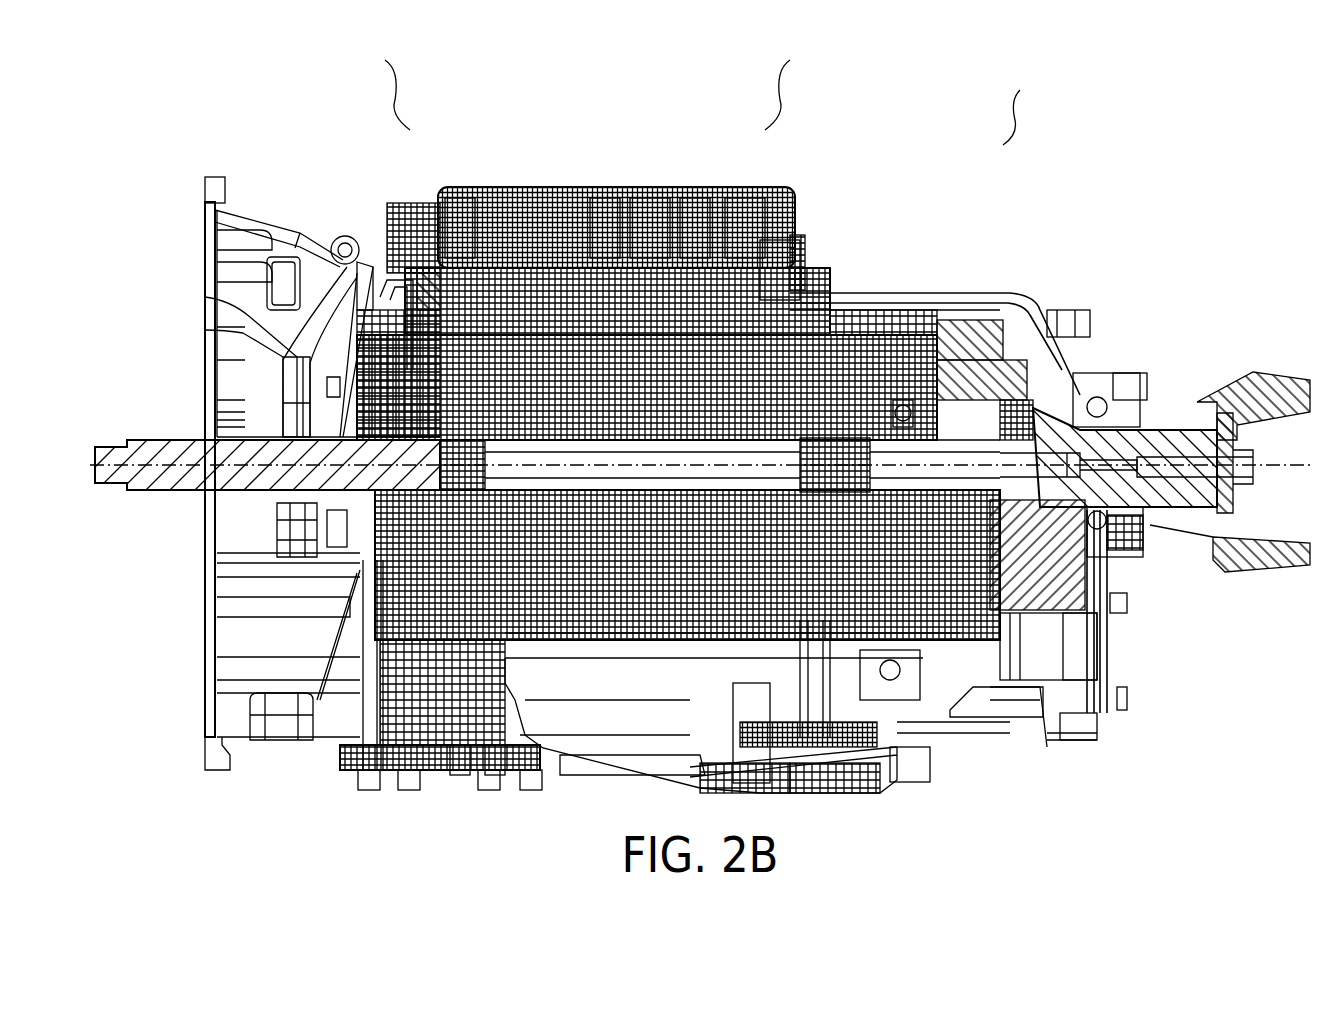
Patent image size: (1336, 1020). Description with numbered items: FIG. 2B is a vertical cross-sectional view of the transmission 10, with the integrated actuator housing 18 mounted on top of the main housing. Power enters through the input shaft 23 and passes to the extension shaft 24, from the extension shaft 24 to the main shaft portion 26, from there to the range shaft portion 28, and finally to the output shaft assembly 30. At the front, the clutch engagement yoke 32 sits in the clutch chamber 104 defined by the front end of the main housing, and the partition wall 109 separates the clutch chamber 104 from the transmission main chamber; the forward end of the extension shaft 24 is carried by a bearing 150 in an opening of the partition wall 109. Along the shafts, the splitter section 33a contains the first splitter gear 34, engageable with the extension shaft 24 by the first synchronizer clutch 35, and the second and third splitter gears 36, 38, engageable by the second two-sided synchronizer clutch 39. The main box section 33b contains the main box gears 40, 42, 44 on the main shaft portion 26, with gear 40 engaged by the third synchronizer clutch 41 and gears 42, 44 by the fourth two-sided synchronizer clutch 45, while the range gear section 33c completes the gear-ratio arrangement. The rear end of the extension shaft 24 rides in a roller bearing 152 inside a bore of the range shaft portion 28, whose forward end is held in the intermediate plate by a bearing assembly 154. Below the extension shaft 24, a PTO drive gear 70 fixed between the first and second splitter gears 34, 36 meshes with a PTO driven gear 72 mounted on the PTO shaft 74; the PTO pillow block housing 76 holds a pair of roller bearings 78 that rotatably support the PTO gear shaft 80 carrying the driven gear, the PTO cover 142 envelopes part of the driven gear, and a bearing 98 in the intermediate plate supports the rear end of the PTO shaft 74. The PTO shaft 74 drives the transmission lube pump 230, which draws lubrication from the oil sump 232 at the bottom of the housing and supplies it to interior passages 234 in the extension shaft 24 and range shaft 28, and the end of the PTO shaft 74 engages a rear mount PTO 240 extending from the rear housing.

The transmission 10 is at (1003, 145).
The integrated actuator housing 18 is at (490, 188).
The input shaft 23 is at (172, 483).
The extension shaft 24 is at (207, 568).
The main shaft portion 26 is at (735, 200).
The range shaft portion 28 is at (1095, 565).
The output shaft assembly 30 is at (1165, 430).
The clutch engagement yoke 32 is at (292, 357).
The splitter section 33a is at (410, 130).
The main box section 33b is at (765, 130).
The range gear section 33c is at (1040, 272).
The first splitter gear 34 is at (385, 265).
The first synchronizer clutch 35 is at (278, 366).
The second splitter gear 36 is at (430, 222).
The third splitter gear 38 is at (560, 197).
The second two-sided synchronizer clutch 39 is at (470, 196).
The main box gear 40 is at (640, 197).
The third synchronizer clutch 41 is at (605, 197).
The main box gear 42 is at (690, 197).
The main box gear 44 is at (840, 285).
The fourth two-sided synchronizer clutch 45 is at (780, 240).
The PTO drive gear 70 is at (352, 758).
The PTO driven gear 72 is at (497, 775).
The PTO shaft 74 is at (730, 650).
The PTO pillow block housing 76 is at (362, 780).
The roller bearings 78 is at (432, 778).
The PTO gear shaft 80 is at (405, 775).
The bearing 98 is at (842, 775).
The clutch chamber 104 is at (250, 318).
The partition wall 109 is at (293, 303).
The PTO cover 142 is at (462, 775).
The bearing 150 is at (262, 401).
The roller bearing 152 is at (895, 335).
The bearing assembly 154 is at (860, 305).
The transmission lube pump 230 is at (915, 762).
The oil sump 232 is at (785, 765).
The interior passages 234 is at (642, 770).
The rear mount PTO 240 is at (1040, 747).